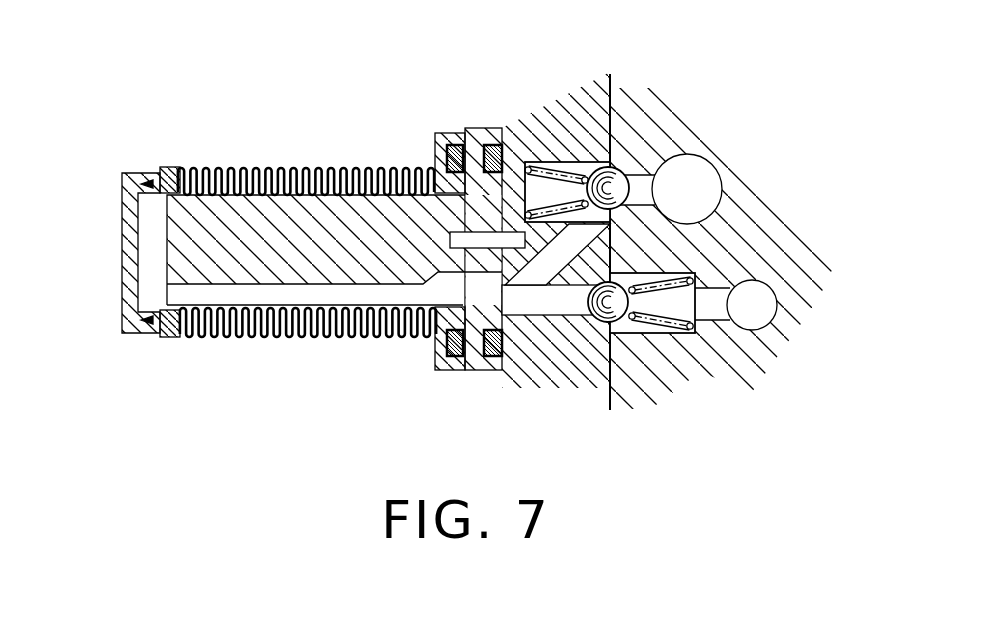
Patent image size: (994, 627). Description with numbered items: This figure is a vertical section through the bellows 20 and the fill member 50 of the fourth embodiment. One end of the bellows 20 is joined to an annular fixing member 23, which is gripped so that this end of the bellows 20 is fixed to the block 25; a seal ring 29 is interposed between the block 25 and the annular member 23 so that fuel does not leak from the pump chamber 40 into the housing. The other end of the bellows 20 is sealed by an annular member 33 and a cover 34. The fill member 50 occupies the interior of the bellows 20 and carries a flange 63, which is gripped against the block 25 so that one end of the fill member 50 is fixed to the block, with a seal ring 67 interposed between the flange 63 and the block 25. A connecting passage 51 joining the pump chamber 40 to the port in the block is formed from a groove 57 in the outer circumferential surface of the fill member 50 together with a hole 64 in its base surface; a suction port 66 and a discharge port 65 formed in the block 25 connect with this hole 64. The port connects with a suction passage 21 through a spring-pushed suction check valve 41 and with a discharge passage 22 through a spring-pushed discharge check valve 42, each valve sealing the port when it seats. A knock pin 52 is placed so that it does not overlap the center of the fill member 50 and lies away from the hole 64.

The bellows 20 is at (222, 167).
The fill member 50 is at (314, 222).
The groove 57 is at (308, 356).
The connecting passage 51 is at (340, 293).
The knock pin 52 is at (452, 233).
The seal ring 29 is at (455, 133).
The flange 63 is at (478, 130).
The seal ring 67 is at (490, 127).
The block 25 is at (582, 107).
The suction check valve 41 is at (643, 168).
The suction passage 21 is at (697, 178).
The discharge port 65 is at (565, 247).
The discharge passage 22 is at (757, 293).
The discharge check valve 42 is at (615, 314).
The suction port 66 is at (580, 302).
The hole 64 is at (481, 318).
The annular fixing member 23 is at (438, 372).
The annular member 33 is at (165, 337).
The cover 34 is at (123, 321).
The pump chamber 40 is at (153, 253).